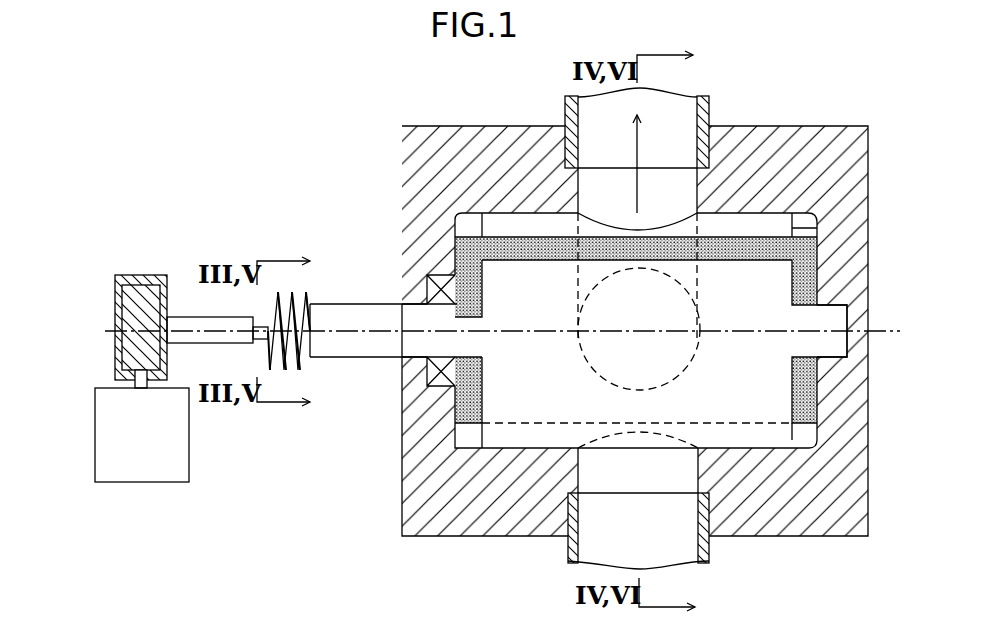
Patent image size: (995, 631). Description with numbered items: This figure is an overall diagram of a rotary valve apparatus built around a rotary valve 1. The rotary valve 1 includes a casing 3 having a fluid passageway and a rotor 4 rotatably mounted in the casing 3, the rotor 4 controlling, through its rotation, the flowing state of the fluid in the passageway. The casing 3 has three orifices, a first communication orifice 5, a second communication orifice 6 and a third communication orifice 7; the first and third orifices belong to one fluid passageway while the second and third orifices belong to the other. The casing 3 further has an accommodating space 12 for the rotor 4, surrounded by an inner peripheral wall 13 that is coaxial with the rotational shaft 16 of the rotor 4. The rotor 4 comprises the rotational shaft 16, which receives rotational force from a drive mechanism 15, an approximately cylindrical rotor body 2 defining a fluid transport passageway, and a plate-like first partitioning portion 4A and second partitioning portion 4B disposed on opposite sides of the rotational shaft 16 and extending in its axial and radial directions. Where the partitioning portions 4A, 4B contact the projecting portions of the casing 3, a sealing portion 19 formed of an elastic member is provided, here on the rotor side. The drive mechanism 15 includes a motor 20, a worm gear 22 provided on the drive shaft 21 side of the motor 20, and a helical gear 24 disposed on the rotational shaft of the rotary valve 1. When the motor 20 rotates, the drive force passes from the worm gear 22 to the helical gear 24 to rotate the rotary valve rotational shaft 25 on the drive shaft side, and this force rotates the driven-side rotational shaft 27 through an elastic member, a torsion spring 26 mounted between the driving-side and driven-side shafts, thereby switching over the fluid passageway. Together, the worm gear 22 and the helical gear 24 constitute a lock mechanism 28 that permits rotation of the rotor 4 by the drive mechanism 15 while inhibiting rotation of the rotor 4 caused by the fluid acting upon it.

The rotary valve 1 is at (227, 146).
The rotor body 2 is at (525, 392).
The casing 3 is at (400, 181).
The rotor 4 is at (734, 213).
The first partitioning portion 4A is at (529, 231).
The second partitioning portion 4B is at (469, 429).
The first communication orifice 5 is at (597, 148).
The second communication orifice 6 is at (682, 550).
The third communication orifice 7 is at (672, 304).
The accommodating space 12 is at (801, 221).
The inner peripheral wall 13 is at (803, 224).
The drive mechanism 15 is at (246, 214).
The rotational shaft 16 is at (840, 316).
The sealing portion 19 is at (551, 262).
The motor 20 is at (162, 483).
The drive shaft 21 is at (130, 386).
The worm gear 22 is at (120, 330).
The helical gear 24 is at (124, 263).
The rotary valve rotational shaft 25 is at (183, 323).
The torsion spring 26 is at (303, 296).
The rotational shaft 27 is at (355, 358).
The lock mechanism 28 is at (140, 249).